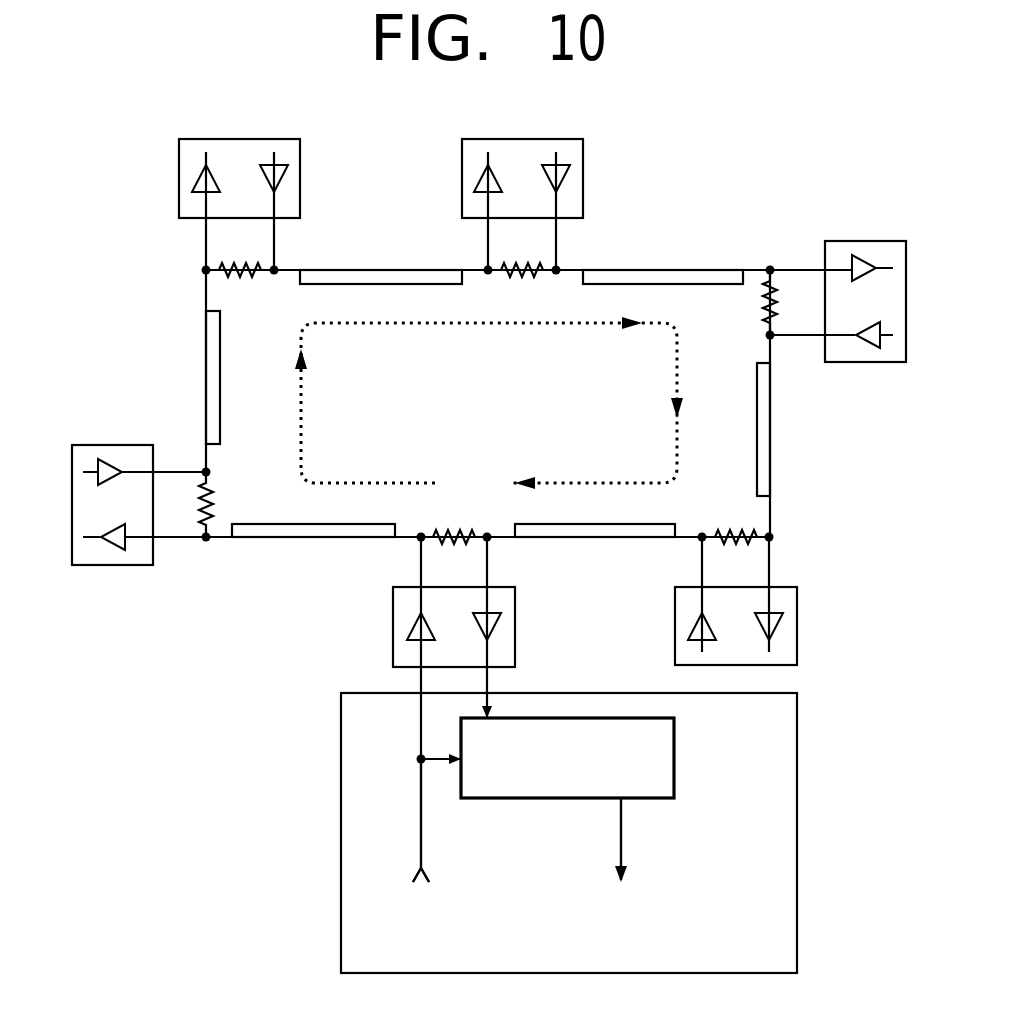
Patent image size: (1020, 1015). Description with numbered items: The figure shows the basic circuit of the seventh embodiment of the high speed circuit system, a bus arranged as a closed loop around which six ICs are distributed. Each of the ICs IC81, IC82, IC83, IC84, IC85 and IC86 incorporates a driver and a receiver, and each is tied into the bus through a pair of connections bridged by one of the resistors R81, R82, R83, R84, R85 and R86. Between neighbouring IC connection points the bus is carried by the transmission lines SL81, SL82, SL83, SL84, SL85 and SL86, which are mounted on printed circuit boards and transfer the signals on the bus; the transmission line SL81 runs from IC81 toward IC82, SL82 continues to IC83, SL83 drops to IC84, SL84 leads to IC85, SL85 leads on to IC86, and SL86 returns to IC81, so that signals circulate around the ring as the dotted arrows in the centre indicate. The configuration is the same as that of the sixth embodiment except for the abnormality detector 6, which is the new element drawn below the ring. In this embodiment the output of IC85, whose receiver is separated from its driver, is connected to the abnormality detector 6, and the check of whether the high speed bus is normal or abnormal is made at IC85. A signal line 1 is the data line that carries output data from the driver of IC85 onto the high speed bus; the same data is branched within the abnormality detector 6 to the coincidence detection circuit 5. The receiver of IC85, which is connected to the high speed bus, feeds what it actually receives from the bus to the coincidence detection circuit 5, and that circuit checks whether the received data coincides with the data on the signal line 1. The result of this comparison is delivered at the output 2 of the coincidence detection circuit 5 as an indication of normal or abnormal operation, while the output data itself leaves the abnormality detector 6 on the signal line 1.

The IC incorporating a driver and a receiver IC81 is at (302, 160).
The IC incorporating a driver and a receiver IC82 is at (585, 160).
The IC incorporating a driver and a receiver IC83 is at (852, 239).
The IC incorporating a driver and a receiver IC84 is at (676, 640).
The IC incorporating a driver and a receiver IC85 is at (392, 640).
The IC incorporating a driver and a receiver IC86 is at (118, 566).
The transmission line SL81 is at (381, 258).
The transmission line SL82 is at (663, 258).
The transmission line SL83 is at (801, 429).
The transmission line SL84 is at (595, 548).
The transmission line SL85 is at (313, 548).
The transmission line SL86 is at (176, 377).
The resistor R81 is at (240, 287).
The resistor R82 is at (522, 287).
The resistor R83 is at (744, 302).
The resistor R84 is at (735, 518).
The resistor R85 is at (454, 519).
The resistor R86 is at (232, 504).
The signal line 1 is at (417, 840).
The normal/abnormal output 2 is at (623, 840).
The coincidence detection circuit 5 is at (676, 757).
The abnormality detector 6 is at (337, 748).